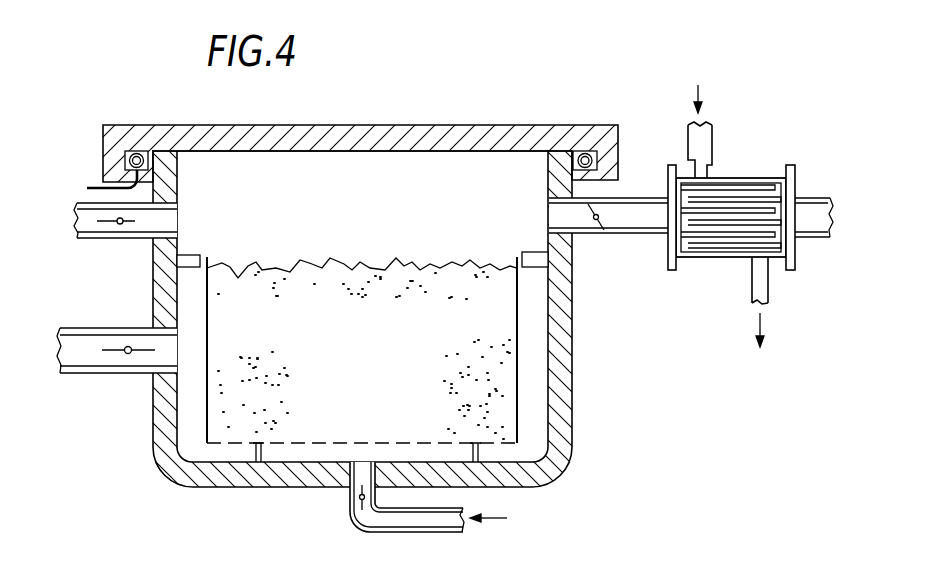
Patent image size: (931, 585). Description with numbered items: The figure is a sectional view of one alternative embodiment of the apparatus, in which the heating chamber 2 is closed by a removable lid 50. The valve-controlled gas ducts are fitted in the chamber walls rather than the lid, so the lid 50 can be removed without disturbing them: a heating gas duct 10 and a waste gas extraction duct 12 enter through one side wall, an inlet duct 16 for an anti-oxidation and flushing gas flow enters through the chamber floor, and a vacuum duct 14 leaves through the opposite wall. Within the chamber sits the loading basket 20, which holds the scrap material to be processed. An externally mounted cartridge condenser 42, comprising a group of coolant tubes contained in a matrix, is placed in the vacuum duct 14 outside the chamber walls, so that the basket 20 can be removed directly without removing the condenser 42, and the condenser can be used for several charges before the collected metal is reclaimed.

The heating chamber 2 is at (550, 418).
The heating gas duct 10 is at (84, 375).
The waste gas extraction duct 12 is at (95, 236).
The vacuum duct 14 is at (812, 239).
The inlet duct 16 is at (422, 532).
The loading basket 20 is at (520, 351).
The cartridge condenser 42 is at (740, 185).
The lid 50 is at (383, 126).